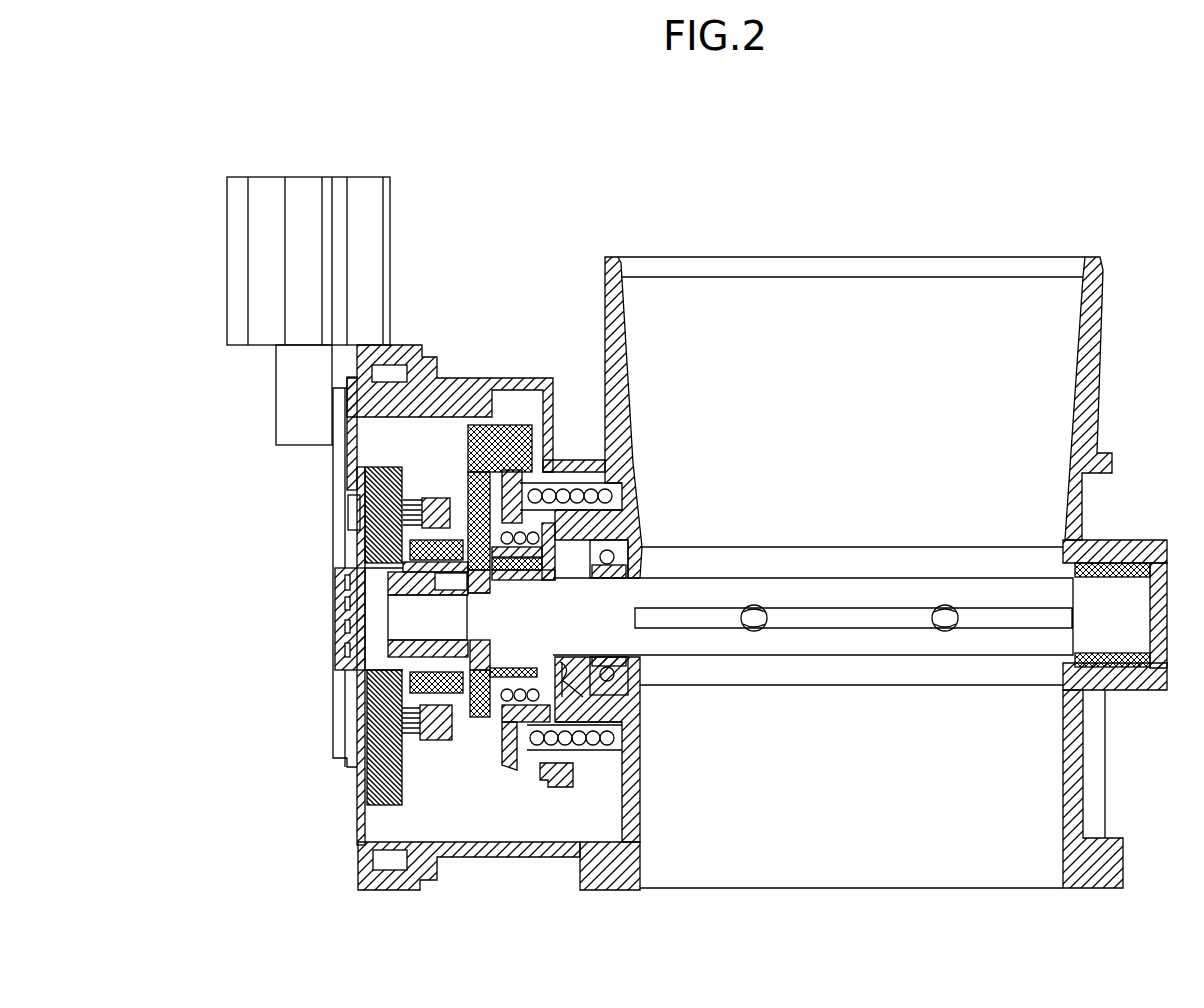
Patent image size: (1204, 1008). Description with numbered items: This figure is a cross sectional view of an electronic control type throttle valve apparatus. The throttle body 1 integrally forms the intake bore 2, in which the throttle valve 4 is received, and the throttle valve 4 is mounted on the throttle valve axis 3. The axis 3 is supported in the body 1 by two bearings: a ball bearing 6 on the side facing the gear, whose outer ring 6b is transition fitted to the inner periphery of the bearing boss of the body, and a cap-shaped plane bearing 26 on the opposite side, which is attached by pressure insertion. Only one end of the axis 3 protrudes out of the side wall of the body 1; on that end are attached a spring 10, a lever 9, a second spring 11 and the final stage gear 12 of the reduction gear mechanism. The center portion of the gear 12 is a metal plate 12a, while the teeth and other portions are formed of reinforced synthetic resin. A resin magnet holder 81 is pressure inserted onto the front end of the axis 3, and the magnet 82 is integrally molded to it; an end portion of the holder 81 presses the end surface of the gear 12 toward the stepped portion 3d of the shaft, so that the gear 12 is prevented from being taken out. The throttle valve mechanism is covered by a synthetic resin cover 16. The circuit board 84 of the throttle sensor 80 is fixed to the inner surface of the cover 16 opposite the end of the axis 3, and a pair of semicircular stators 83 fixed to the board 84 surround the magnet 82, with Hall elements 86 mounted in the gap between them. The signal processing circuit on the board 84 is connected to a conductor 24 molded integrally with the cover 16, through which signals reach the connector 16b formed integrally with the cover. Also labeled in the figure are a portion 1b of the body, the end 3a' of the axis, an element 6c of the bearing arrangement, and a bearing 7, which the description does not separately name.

The throttle body 1 is at (852, 572).
The housing bottom wall 1b is at (1130, 690).
The receiving portion (intake bore) 2 is at (832, 367).
The throttle valve axis 3 is at (722, 547).
The shaft end 3a' is at (327, 619).
The stepped portion 3d is at (490, 643).
The throttle valve 4 is at (897, 620).
The ball bearing 6 is at (607, 578).
The outer ring 6b is at (605, 695).
The seal ring 6c is at (640, 665).
The bearing 7 is at (640, 512).
The lever 9 is at (505, 770).
The spring 10 is at (552, 775).
The spring 11 is at (497, 708).
The final stage gear 12 is at (512, 423).
The metal plate 12a is at (490, 592).
The cover 16 is at (363, 862).
The connector 16b is at (365, 200).
The conductor 24 is at (335, 582).
The plane bearing 26 is at (1128, 568).
The throttle sensor 80 is at (365, 770).
The magnet holder 81 is at (418, 597).
The magnet 82 is at (457, 648).
The semicircular stators 83 is at (412, 742).
The circuit board 84 is at (362, 472).
The Hall elements 86 is at (436, 498).